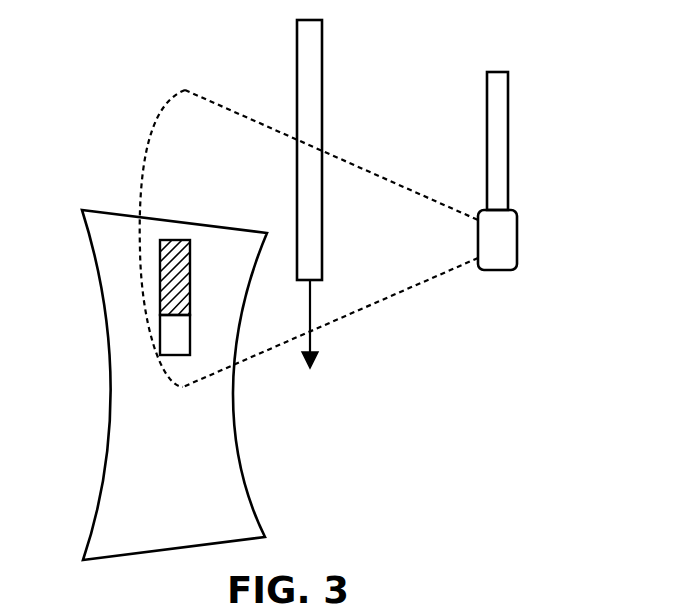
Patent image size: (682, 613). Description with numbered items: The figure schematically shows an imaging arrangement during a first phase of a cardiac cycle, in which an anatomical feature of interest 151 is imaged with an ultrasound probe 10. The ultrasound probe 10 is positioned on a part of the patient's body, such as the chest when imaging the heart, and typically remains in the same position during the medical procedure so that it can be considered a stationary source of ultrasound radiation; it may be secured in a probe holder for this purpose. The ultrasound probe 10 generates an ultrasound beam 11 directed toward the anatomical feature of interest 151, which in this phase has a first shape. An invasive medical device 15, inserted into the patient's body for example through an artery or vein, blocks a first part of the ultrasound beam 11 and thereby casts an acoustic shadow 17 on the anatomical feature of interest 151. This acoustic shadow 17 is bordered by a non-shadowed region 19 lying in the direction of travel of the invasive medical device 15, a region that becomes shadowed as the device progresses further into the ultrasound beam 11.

The ultrasound probe 10 is at (500, 240).
The ultrasound beam 11 is at (408, 287).
The invasive medical device 15 is at (308, 38).
The acoustic shadow 17 is at (170, 282).
The non-shadowed region 19 is at (185, 341).
The anatomical feature of interest 151 is at (132, 426).